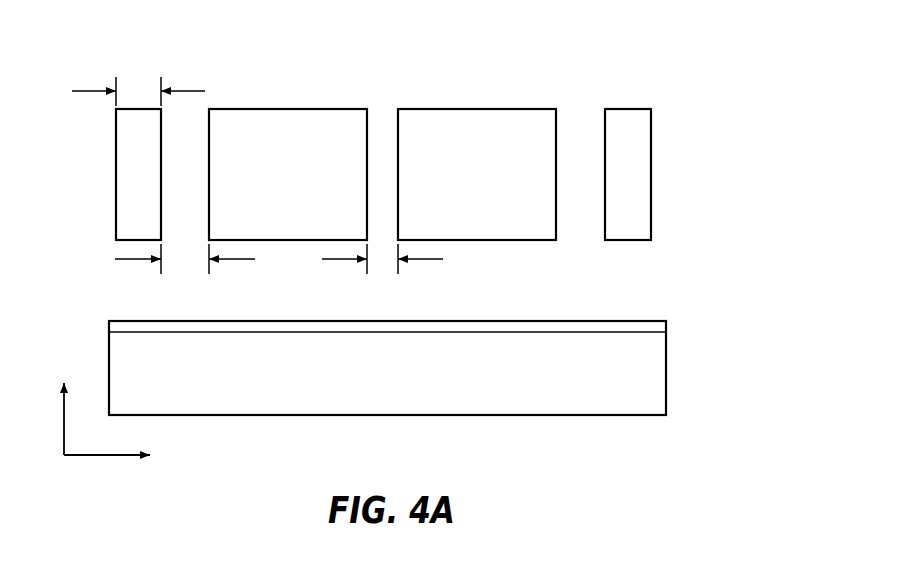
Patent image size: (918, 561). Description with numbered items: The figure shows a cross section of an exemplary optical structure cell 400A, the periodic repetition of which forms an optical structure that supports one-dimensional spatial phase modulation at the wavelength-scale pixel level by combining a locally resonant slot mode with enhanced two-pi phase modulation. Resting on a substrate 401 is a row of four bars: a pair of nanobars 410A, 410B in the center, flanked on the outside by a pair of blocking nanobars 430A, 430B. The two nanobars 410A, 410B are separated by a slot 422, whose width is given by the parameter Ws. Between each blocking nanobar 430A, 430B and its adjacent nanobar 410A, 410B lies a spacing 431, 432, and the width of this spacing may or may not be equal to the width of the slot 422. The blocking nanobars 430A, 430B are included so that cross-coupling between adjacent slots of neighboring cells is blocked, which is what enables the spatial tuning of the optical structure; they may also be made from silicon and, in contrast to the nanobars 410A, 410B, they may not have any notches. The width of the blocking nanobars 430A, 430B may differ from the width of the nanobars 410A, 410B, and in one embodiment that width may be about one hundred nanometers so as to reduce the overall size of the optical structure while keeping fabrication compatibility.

The optical structure cell 400A is at (840, 339).
The substrate 401 is at (645, 360).
The nanobar 410A is at (284, 135).
The nanobar 410B is at (476, 135).
The slot 422 is at (380, 135).
The blocking nanobar 430A is at (127, 188).
The blocking nanobar 430B is at (635, 173).
The spacing 431 is at (188, 135).
The spacing 432 is at (576, 135).